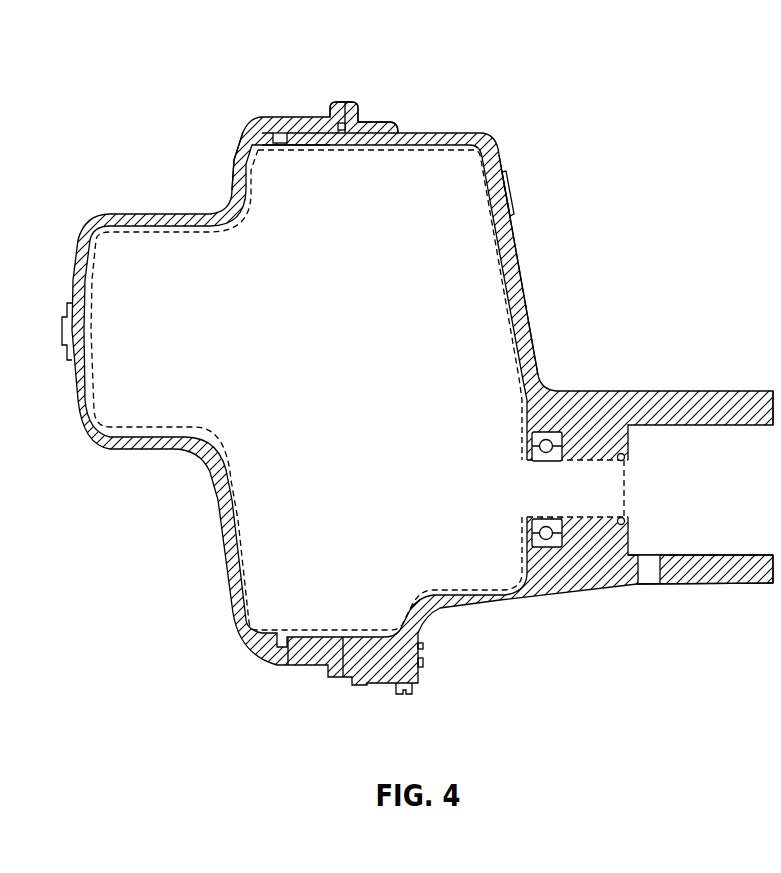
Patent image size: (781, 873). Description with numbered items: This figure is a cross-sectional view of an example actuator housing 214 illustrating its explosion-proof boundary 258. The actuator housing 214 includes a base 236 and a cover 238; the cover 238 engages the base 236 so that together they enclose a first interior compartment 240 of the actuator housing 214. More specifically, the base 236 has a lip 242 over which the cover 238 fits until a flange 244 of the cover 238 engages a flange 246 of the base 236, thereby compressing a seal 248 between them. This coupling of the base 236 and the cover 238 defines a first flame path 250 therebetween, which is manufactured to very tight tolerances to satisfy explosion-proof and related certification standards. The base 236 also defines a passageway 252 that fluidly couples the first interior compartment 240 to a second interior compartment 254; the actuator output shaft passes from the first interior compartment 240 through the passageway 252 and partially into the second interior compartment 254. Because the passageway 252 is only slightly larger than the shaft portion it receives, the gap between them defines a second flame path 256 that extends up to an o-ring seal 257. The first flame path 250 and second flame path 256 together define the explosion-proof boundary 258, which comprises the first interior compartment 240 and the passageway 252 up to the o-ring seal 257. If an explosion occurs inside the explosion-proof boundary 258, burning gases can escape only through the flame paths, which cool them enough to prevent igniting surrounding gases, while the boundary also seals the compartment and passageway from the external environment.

The actuator housing 214 is at (684, 100).
The base 236 is at (441, 138).
The cover 238 is at (240, 143).
The first interior compartment 240 is at (320, 389).
The lip 242 is at (328, 137).
The flange of the cover 244 is at (338, 106).
The flange of the base 246 is at (360, 110).
The seal 248 is at (342, 127).
The first flame path 250 is at (318, 140).
The passageway 252 is at (561, 505).
The second interior compartment 254 is at (735, 502).
The second flame path 256 is at (550, 465).
The o-ring seal 257 is at (621, 453).
The explosion-proof boundary 258 is at (518, 345).